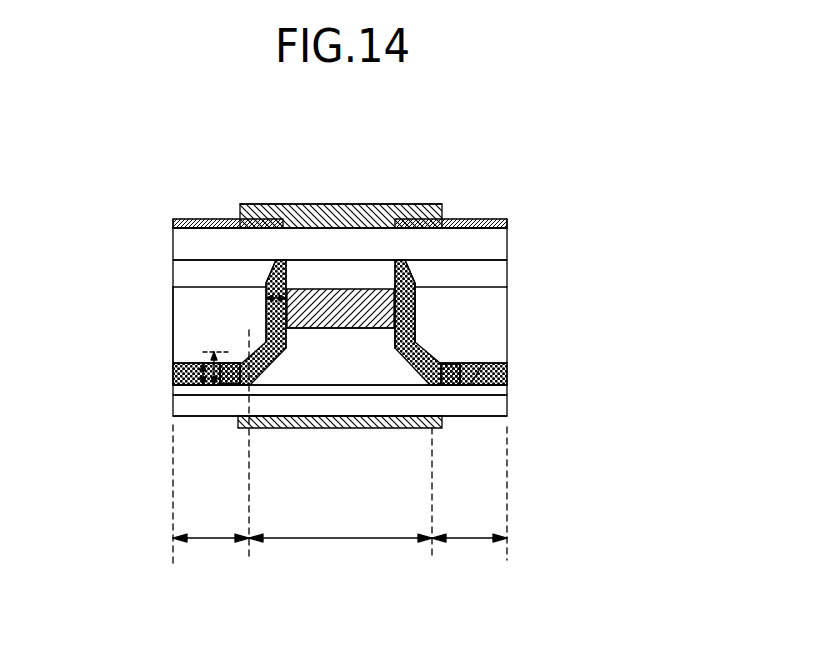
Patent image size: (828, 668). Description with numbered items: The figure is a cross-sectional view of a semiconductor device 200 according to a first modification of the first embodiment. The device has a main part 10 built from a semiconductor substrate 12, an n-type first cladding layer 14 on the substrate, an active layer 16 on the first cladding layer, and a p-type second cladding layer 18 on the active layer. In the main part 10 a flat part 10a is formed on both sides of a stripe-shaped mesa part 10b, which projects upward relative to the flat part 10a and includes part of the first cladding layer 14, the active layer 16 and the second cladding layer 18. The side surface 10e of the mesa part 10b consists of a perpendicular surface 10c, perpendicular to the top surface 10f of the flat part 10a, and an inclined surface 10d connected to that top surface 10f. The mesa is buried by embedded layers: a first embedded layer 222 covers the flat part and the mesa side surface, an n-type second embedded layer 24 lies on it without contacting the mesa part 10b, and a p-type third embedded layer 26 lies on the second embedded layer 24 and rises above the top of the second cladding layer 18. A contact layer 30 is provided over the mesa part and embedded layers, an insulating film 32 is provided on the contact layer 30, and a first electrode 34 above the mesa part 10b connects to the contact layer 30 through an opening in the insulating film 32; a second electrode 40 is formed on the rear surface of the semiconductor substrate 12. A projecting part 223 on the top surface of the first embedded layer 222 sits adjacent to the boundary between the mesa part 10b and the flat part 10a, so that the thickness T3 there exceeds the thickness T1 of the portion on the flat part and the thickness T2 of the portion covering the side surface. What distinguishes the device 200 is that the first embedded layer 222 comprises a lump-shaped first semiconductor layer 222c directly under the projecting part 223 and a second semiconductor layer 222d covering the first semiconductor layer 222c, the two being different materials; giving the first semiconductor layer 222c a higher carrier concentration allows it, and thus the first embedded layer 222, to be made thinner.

The semiconductor device 200 is at (110, 122).
The main part 10 is at (340, 400).
The flat part 10a is at (468, 573).
The mesa part 10b is at (340, 540).
The perpendicular surface 10c is at (413, 345).
The inclined surface 10d is at (412, 333).
The side surface 10e is at (512, 138).
The top surface 10f is at (448, 360).
The semiconductor substrate 12 is at (280, 403).
The first cladding layer 14 is at (317, 372).
The active layer 16 is at (341, 333).
The second cladding layer 18 is at (377, 278).
The second embedded layer 24 is at (180, 327).
The third embedded layer 26 is at (180, 275).
The contact layer 30 is at (180, 245).
The insulating film 32 is at (190, 219).
The first electrode 34 is at (317, 204).
The second electrode 40 is at (440, 427).
The first embedded layer 222 is at (385, 318).
The first semiconductor layer 222c is at (452, 385).
The second semiconductor layer 222d is at (508, 368).
The projecting part 223 is at (243, 355).
The thickness of first portion T1 is at (213, 372).
The thickness of second portion T2 is at (277, 296).
The thickness at projecting part T3 is at (203, 385).